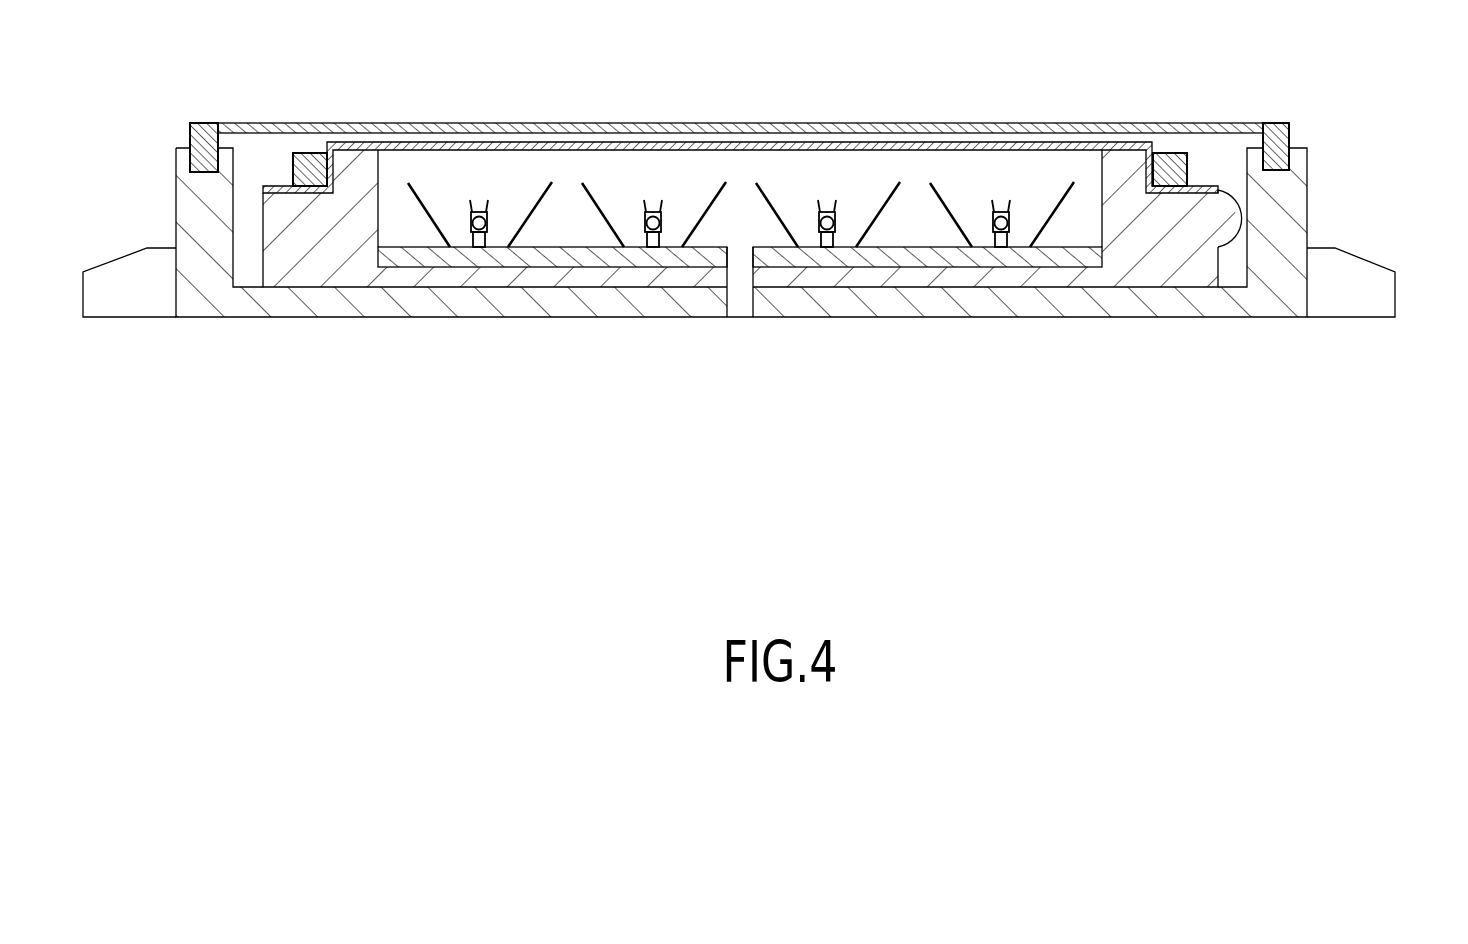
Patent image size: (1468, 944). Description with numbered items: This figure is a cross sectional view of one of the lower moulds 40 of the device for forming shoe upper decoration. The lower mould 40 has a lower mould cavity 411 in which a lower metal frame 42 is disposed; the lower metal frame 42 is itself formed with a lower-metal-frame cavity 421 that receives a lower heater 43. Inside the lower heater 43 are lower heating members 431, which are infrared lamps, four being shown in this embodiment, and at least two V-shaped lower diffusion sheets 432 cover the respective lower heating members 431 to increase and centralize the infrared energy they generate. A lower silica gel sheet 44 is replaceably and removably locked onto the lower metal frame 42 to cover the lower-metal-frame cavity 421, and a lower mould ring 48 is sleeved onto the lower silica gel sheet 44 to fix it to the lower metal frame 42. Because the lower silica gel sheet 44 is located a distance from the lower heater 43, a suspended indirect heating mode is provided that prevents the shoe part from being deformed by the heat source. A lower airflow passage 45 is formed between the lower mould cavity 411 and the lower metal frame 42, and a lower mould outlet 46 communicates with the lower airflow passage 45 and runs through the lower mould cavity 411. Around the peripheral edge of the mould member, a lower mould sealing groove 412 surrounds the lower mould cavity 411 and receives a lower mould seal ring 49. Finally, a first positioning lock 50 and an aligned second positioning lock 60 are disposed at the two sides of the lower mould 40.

The lower mould 40 is at (1326, 197).
The lower mould cavity 411 is at (1237, 187).
The lower mould sealing groove 412 is at (208, 172).
The lower metal frame 42 is at (348, 250).
The lower-metal-frame cavity 421 is at (378, 175).
The lower heater 43 is at (640, 275).
The lower heating member 431 is at (1002, 222).
The V-shaped lower diffusion sheet 432 is at (1048, 225).
The lower silica gel sheet 44 is at (950, 147).
The lower airflow passage 45 is at (1202, 165).
The lower mould outlet 46 is at (1225, 227).
The lower mould ring 48 is at (310, 165).
The lower mould seal ring 49 is at (203, 142).
The first positioning lock 50 is at (148, 295).
The second positioning lock 60 is at (1378, 293).